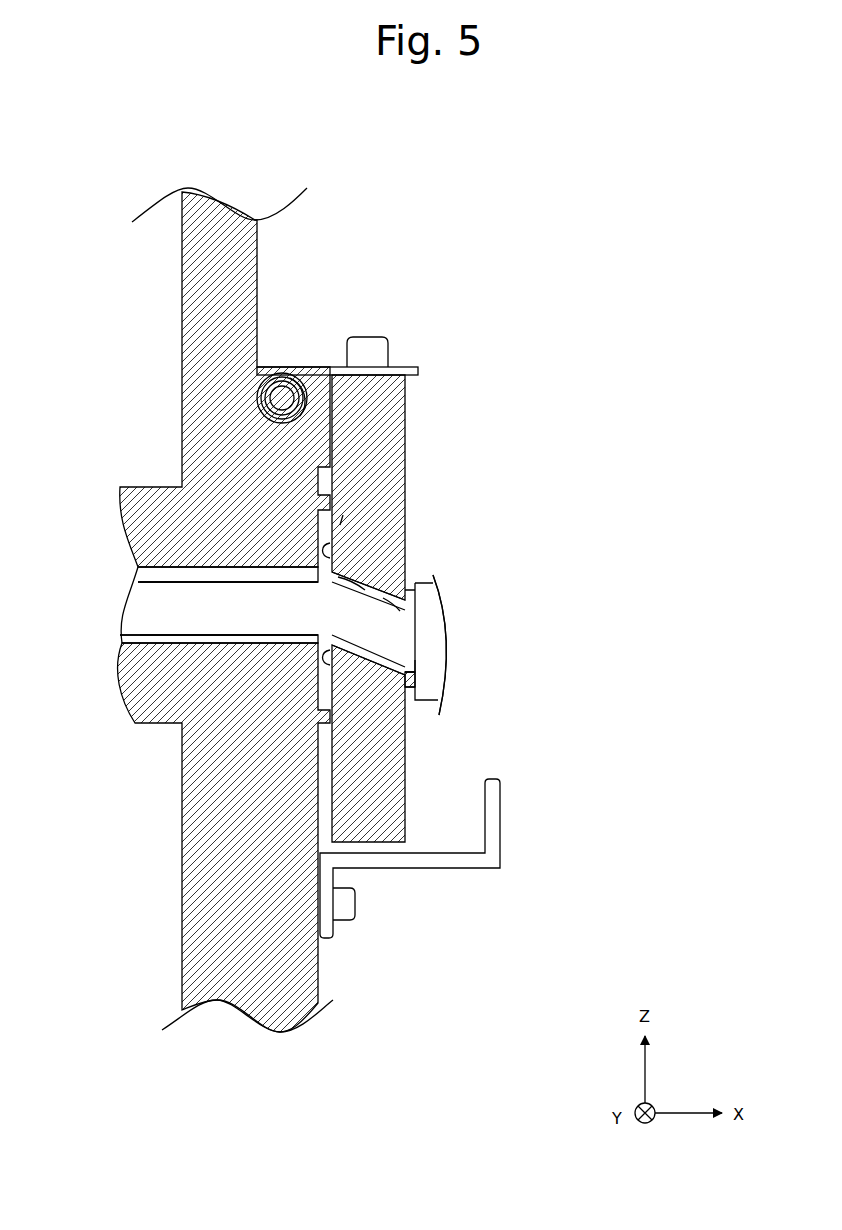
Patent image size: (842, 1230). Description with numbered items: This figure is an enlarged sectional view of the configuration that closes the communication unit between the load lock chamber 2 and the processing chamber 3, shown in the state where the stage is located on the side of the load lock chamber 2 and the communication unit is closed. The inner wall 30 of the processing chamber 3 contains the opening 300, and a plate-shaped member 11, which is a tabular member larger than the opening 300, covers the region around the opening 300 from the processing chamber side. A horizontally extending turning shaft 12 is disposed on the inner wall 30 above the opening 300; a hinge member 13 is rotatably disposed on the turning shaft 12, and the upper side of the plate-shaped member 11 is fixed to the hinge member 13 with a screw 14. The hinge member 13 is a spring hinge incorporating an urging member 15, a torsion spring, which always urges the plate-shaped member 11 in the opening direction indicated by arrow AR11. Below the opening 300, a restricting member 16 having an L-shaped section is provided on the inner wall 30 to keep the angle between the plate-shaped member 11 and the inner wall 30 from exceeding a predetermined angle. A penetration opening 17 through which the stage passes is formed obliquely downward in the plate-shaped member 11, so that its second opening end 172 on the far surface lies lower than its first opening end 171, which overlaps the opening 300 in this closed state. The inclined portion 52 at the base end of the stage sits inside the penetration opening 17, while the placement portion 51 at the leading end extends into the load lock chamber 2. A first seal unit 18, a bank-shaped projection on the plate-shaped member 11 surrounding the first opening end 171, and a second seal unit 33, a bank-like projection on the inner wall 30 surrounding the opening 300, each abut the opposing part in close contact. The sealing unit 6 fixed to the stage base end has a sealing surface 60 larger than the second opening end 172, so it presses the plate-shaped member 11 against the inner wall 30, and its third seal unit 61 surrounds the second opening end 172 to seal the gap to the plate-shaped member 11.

The load lock chamber 2 is at (135, 572).
The processing chamber 3 is at (432, 564).
The sealing unit 6 is at (428, 702).
The plate-shaped member 11 is at (407, 408).
The turning shaft 12 is at (282, 384).
The hinge member 13 is at (418, 370).
The screw 14 is at (381, 338).
The urging member 15 is at (300, 380).
The restricting member 16 is at (502, 827).
The penetration opening 17 is at (407, 574).
The first seal unit 18 is at (333, 738).
The inner wall 30 is at (262, 248).
The second seal unit 33 is at (343, 515).
The placement portion 51 is at (142, 638).
The inclined portion 52 is at (412, 674).
The sealing surface 60 is at (418, 627).
The third seal unit 61 is at (408, 698).
The first opening end 171 is at (348, 596).
The second opening end 172 is at (397, 615).
The opening 300 is at (316, 571).
The arrow indicating opening direction AR11 is at (316, 426).